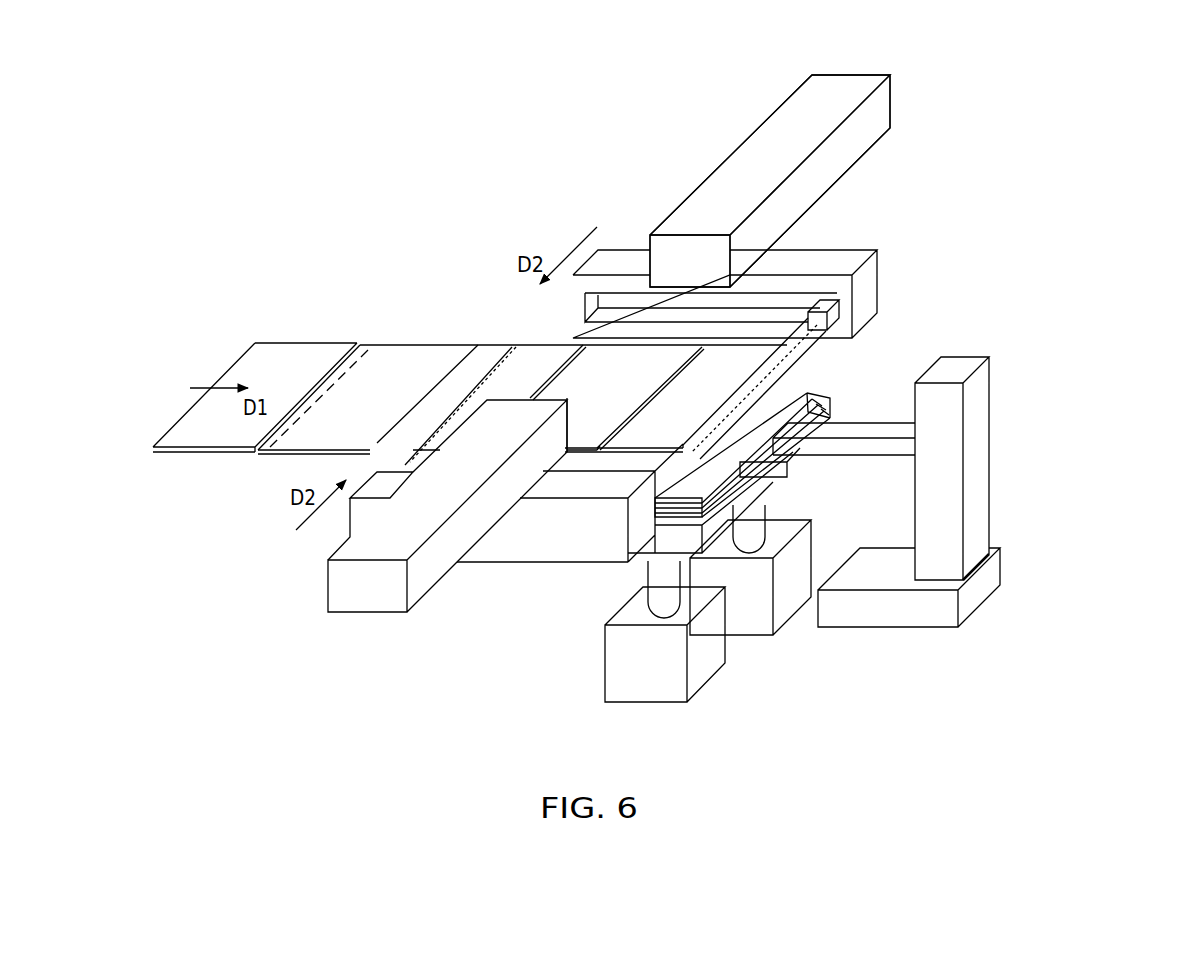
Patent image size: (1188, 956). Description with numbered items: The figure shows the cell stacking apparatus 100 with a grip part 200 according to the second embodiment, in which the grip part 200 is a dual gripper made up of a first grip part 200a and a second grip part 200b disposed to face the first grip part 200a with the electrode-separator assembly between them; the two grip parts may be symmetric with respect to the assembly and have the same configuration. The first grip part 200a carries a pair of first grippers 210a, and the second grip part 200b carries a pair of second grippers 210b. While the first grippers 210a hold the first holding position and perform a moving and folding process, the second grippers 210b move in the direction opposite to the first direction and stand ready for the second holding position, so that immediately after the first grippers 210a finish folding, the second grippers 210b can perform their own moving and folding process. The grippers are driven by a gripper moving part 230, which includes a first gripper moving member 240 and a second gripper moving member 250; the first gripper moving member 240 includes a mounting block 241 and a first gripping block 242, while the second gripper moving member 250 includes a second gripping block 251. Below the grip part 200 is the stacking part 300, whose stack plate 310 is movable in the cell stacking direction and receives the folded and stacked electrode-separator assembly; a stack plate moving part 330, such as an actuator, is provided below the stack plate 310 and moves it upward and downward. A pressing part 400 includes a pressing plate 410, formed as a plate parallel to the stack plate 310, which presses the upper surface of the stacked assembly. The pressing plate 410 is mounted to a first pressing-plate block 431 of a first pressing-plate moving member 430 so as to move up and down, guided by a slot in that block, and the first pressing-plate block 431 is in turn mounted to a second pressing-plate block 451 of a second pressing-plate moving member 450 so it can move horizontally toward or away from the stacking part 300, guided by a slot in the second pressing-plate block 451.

The cell stacking apparatus 100 is at (357, 77).
The grip part 200 is at (250, 190).
The first grip part 200a is at (730, 117).
The second grip part 200b is at (272, 570).
The first grippers 210a is at (840, 330).
The second grippers 210b is at (478, 378).
The gripper moving part 230 is at (1050, 156).
The first gripper moving member 240 is at (960, 275).
The mounting block 241 is at (852, 291).
The first gripping block 242 is at (832, 256).
The second gripper moving member 250 is at (966, 163).
The second gripping block 251 is at (862, 135).
The stacking part 300 is at (514, 608).
The stack plate 310 is at (662, 544).
The stack plate moving part 330 is at (607, 656).
The pressing part 400 is at (878, 500).
The pressing plate 410 is at (792, 458).
The first pressing-plate moving member 430 is at (1095, 449).
The first pressing-plate block 431 is at (950, 468).
The second pressing-plate moving member 450 is at (878, 704).
The second pressing-plate block 451 is at (885, 628).